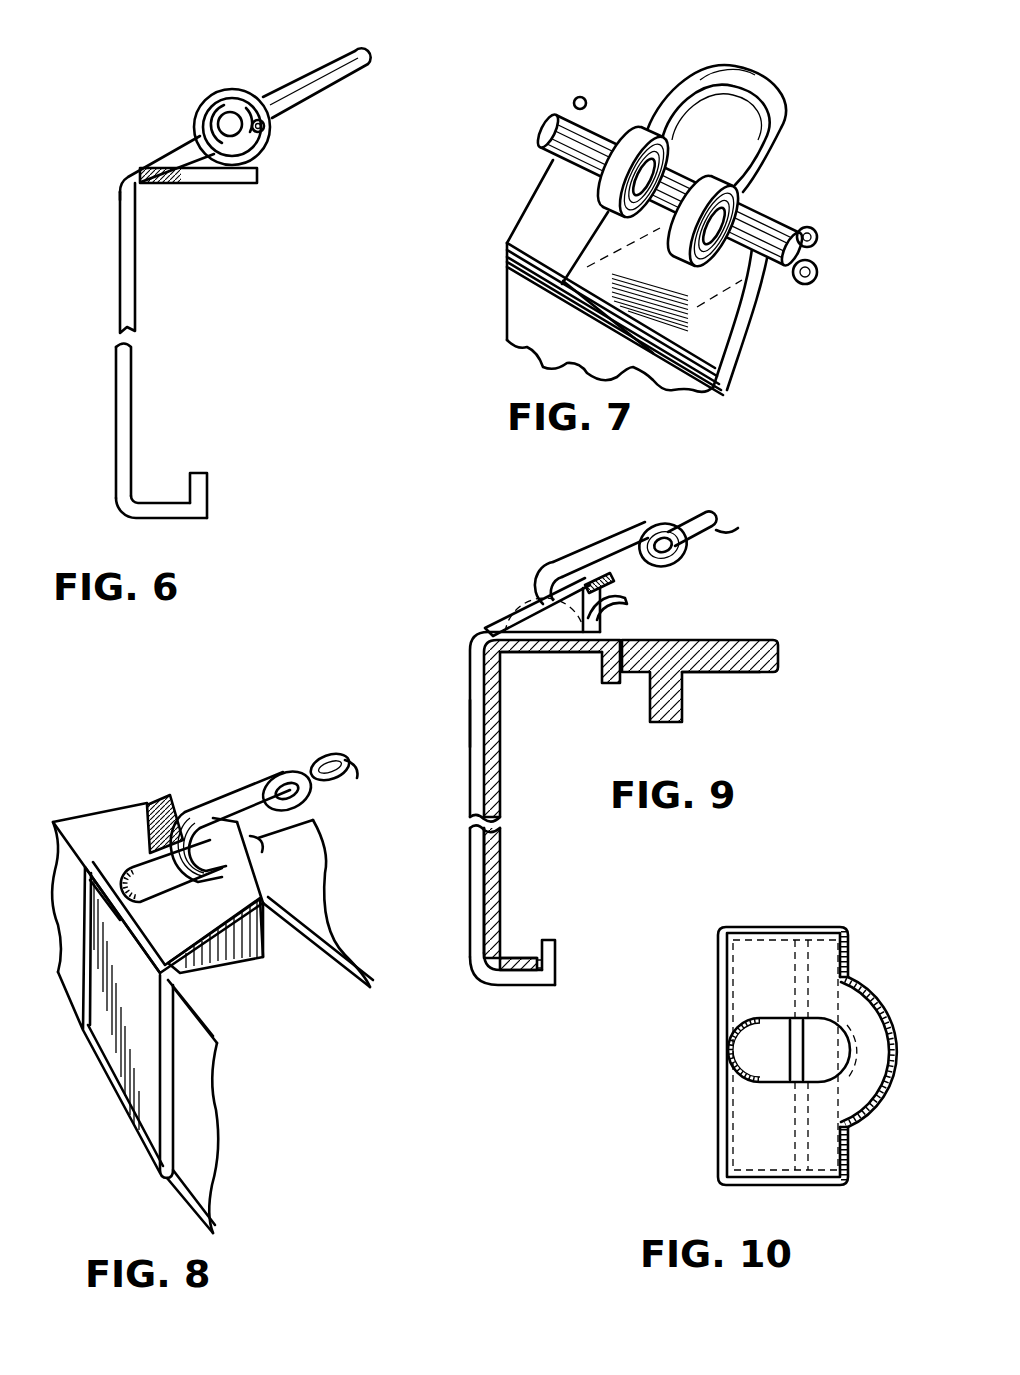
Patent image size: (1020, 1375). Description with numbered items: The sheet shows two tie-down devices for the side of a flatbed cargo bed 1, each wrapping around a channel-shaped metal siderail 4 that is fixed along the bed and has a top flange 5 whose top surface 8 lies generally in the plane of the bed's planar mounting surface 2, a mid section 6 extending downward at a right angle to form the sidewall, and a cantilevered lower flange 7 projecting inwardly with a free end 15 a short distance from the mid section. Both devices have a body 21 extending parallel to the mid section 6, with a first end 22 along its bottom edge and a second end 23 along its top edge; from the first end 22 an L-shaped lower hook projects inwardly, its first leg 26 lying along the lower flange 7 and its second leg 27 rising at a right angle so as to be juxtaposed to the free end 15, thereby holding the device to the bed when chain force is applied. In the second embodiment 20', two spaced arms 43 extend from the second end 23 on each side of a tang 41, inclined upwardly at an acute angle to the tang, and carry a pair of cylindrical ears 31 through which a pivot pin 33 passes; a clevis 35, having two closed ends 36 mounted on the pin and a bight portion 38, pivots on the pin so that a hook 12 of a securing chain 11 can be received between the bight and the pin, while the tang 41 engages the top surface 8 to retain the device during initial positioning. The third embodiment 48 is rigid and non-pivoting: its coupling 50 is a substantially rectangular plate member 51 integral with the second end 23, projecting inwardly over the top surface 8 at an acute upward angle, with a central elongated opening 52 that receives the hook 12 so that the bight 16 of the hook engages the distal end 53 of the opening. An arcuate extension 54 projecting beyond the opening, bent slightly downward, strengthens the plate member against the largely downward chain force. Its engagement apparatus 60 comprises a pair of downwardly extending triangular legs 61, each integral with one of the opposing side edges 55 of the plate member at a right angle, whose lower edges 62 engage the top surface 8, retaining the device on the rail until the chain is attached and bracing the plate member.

In FIG. 9, the cargo bed 1 is at (739, 678).
In FIG. 9, the planar mounting surface 2 is at (750, 638).
In FIG. 8, the siderail 4 is at (202, 1117).
In FIG. 9, the siderail 4 is at (512, 737).
In FIG. 8, the top flange 5 is at (224, 977).
In FIG. 9, the top flange 5 is at (553, 654).
In FIG. 9, the mid section 6 is at (502, 850).
In FIG. 9, the lower flange 7 is at (508, 957).
In FIG. 10, the lower flange 7 is at (805, 1063).
In FIG. 8, the top surface 8 is at (312, 992).
In FIG. 9, the top surface 8 is at (599, 635).
In FIG. 8, the securing chain 11 is at (339, 745).
In FIG. 9, the securing chain 11 is at (722, 522).
In FIG. 8, the hook 12 is at (246, 783).
In FIG. 9, the hook 12 is at (608, 535).
In FIG. 9, the free end 15 is at (547, 962).
In FIG. 8, the bight 16 is at (190, 835).
In FIG. 6, the second embodiment tie-down device 20' is at (260, 155).
In FIG. 7, the second embodiment tie-down device 20' is at (672, 204).
In FIG. 6, the body 21 is at (130, 305).
In FIG. 7, the body 21 is at (528, 312).
In FIG. 8, the body 21 is at (133, 1012).
In FIG. 9, the body 21 is at (470, 787).
In FIG. 6, the first end 22 is at (112, 493).
In FIG. 9, the first end 22 is at (467, 937).
In FIG. 6, the second end 23 is at (118, 193).
In FIG. 7, the second end 23 is at (508, 283).
In FIG. 9, the second end 23 is at (472, 660).
In FIG. 6, the first leg 26 is at (158, 520).
In FIG. 9, the first leg 26 is at (517, 987).
In FIG. 10, the first leg 26 is at (760, 1058).
In FIG. 6, the second leg 27 is at (197, 495).
In FIG. 9, the second leg 27 is at (557, 945).
In FIG. 6, the cylindrical ears 31 is at (257, 155).
In FIG. 7, the cylindrical ears 31 is at (598, 118).
In FIG. 6, the pivot pin 33 is at (232, 121).
In FIG. 7, the pivot pin 33 is at (818, 273).
In FIG. 6, the clevis 35 is at (337, 95).
In FIG. 7, the clevis 35 is at (683, 103).
In FIG. 6, the closed ends 36 is at (207, 97).
In FIG. 7, the closed ends 36 is at (775, 160).
In FIG. 7, the bight portion 38 is at (750, 65).
In FIG. 6, the tang 41 is at (198, 185).
In FIG. 7, the tang 41 is at (722, 318).
In FIG. 6, the arms 43 is at (177, 145).
In FIG. 7, the arms 43 is at (538, 207).
In FIG. 8, the third embodiment tie-down device 48 is at (295, 733).
In FIG. 9, the third embodiment tie-down device 48 is at (793, 566).
In FIG. 10, the third embodiment tie-down device 48 is at (679, 1137).
In FIG. 8, the coupling 50 is at (130, 840).
In FIG. 8, the plate member 51 is at (115, 863).
In FIG. 9, the plate member 51 is at (515, 612).
In FIG. 10, the plate member 51 is at (750, 987).
In FIG. 8, the elongated opening 52 is at (85, 1032).
In FIG. 10, the elongated opening 52 is at (802, 950).
In FIG. 8, the distal end 53 is at (252, 862).
In FIG. 10, the distal end 53 is at (850, 1027).
In FIG. 8, the arcuate extension 54 is at (250, 842).
In FIG. 9, the arcuate extension 54 is at (617, 578).
In FIG. 10, the arcuate extension 54 is at (860, 1083).
In FIG. 8, the side edges 55 is at (152, 805).
In FIG. 10, the side edges 55 is at (767, 935).
In FIG. 8, the engagement apparatus 60 is at (217, 1010).
In FIG. 8, the triangular legs 61 is at (232, 960).
In FIG. 9, the triangular legs 61 is at (540, 625).
In FIG. 8, the lower edges 62 is at (275, 953).